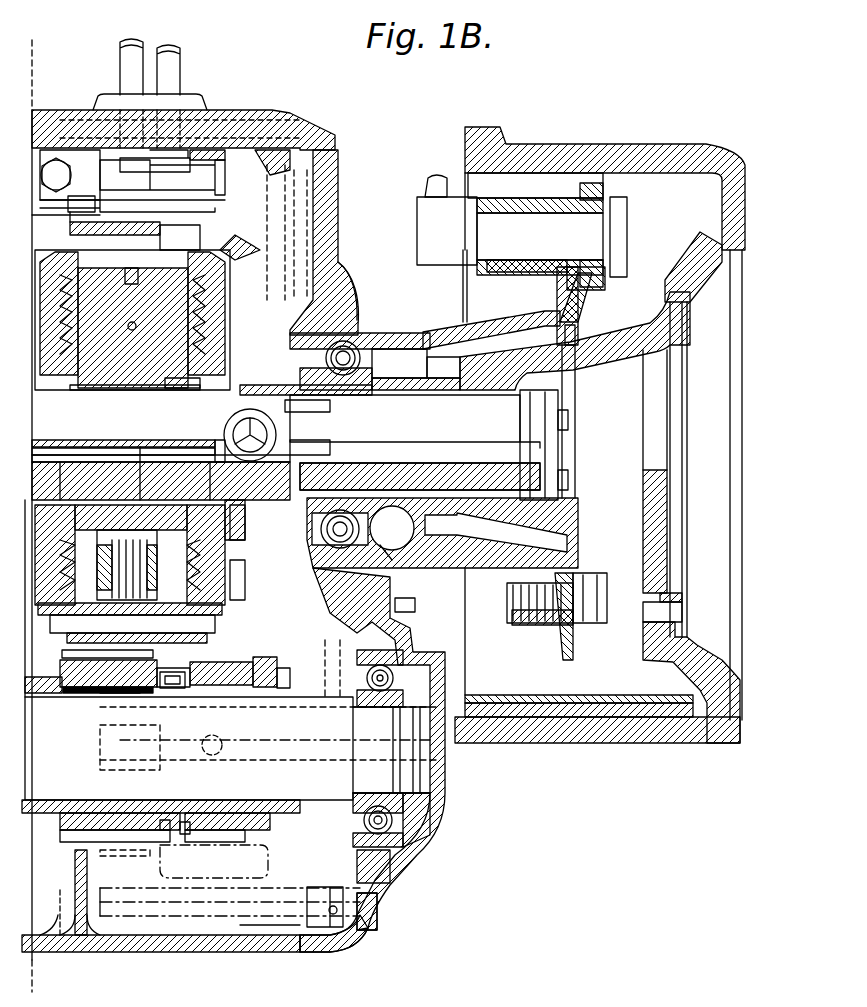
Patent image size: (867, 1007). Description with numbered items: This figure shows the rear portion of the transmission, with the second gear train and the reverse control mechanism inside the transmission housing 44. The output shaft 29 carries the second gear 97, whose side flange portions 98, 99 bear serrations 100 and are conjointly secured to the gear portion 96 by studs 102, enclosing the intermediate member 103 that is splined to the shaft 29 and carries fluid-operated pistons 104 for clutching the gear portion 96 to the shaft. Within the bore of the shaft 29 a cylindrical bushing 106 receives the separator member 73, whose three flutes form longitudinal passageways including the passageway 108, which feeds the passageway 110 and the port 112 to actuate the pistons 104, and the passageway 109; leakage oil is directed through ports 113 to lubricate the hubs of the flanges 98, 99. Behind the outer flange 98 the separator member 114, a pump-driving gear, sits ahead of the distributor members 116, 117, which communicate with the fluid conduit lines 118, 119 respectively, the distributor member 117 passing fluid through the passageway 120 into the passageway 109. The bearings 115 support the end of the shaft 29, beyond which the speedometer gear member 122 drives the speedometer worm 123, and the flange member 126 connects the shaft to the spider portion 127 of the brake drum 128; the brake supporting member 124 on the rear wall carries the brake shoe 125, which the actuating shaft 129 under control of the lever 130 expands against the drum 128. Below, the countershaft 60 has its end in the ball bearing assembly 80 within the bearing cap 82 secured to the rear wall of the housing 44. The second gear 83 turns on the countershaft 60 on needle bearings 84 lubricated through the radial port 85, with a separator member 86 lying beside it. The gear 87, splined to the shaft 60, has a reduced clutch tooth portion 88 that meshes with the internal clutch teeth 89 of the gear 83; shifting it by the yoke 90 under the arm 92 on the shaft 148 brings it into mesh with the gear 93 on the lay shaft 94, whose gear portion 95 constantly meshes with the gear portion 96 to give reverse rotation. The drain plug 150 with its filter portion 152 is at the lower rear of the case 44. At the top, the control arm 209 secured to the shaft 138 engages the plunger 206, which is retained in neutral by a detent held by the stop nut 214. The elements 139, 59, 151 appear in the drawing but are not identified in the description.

The hydraulic line 139 is at (128, 52).
The shaft 138 is at (176, 63).
The stop nut 214 is at (55, 168).
The plunger 206 is at (130, 188).
The control arm 209 is at (180, 178).
The side flange portion 99 is at (66, 225).
The gear portion 96 is at (175, 245).
The second gear 97 is at (210, 245).
The side flange portion 98 is at (240, 247).
The fluid conduit line 119 is at (340, 242).
The fluid conduit line 118 is at (342, 275).
The distributor member 117 is at (325, 340).
The bearings 115 is at (378, 358).
The speedometer gear member 122 is at (425, 352).
The flange member 126 is at (598, 348).
The brake drum 128 is at (638, 150).
The spider portion 127 is at (712, 240).
The lever 130 is at (428, 208).
The actuating shaft 129 is at (508, 228).
The brake shoe 125 is at (515, 698).
The serrations 100 is at (175, 328).
The intermediate member 103 is at (112, 388).
The output shaft 29 is at (172, 412).
The ports 113 is at (57, 440).
The passageway 110 is at (106, 448).
The port 112 is at (142, 462).
The cylindrical bushing 106 is at (205, 448).
The studs 102 is at (249, 418).
The passageway 108 is at (285, 392).
The separator member 73 is at (300, 438).
The passageway 109 is at (296, 456).
The passageway 120 is at (340, 448).
The pistons 104 is at (140, 620).
The shaft 148 is at (240, 594).
The separator member 114 is at (238, 556).
The arm 92 is at (225, 650).
The yoke 90 is at (268, 660).
The separator member 86 is at (50, 680).
The gear 87 is at (283, 682).
The bearing 59 is at (40, 698).
The needle bearings 84 is at (105, 695).
The radial port 85 is at (100, 730).
The reduced clutch tooth portion 88 is at (172, 690).
The countershaft 60 is at (292, 734).
The distributor member 116 is at (308, 534).
The speedometer worm 123 is at (392, 568).
The brake supporting member 124 is at (430, 568).
The bearing cap 82 is at (422, 664).
The passage 151 is at (405, 620).
The ball bearing assembly 80 is at (400, 832).
The drain plug 150 is at (372, 932).
The second gear 83 is at (60, 822).
The gear portion 95 is at (75, 866).
The lay shaft 94 is at (58, 922).
The internal clutch teeth 89 is at (175, 842).
The gear 93 is at (262, 866).
The transmission housing 44 is at (176, 954).
The filter portion 152 is at (245, 956).